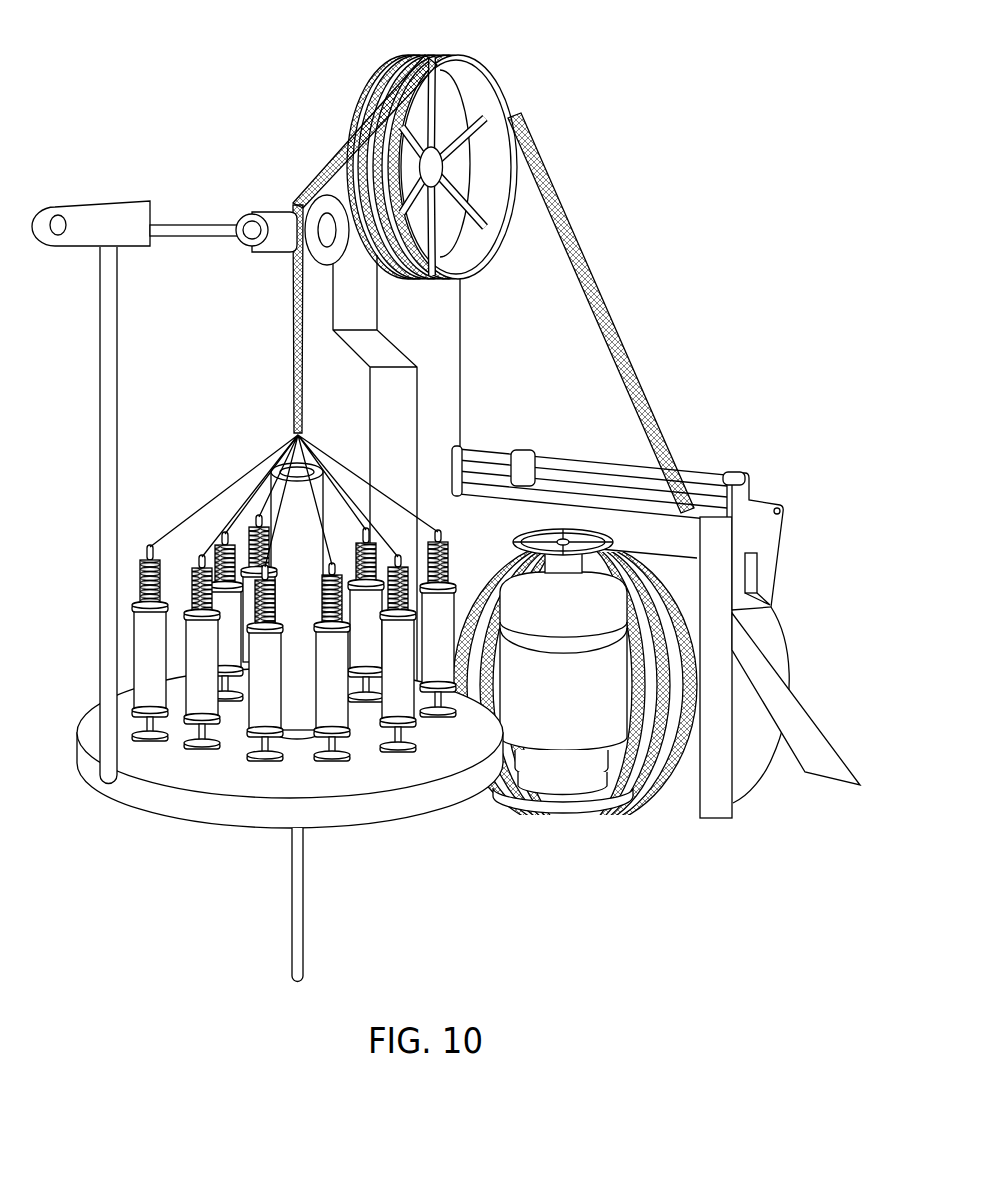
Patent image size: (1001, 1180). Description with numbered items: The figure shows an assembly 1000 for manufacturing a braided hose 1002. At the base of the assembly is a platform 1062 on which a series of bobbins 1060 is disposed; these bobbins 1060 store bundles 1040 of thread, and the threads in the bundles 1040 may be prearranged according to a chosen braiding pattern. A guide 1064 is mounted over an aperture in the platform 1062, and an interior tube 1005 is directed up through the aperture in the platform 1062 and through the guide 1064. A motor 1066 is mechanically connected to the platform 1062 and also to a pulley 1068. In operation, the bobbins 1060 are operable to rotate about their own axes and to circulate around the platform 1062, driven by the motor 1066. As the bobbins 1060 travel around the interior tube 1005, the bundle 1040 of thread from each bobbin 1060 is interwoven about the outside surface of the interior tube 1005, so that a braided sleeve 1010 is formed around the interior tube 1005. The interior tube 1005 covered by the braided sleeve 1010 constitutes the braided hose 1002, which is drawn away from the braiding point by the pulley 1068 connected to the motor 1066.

The assembly 1000 is at (446, 497).
The braided hose 1002 is at (631, 375).
The interior tube 1005 is at (283, 452).
The braided sleeve 1010 is at (286, 392).
The bundles of thread 1040 is at (182, 525).
The bobbins 1060 is at (145, 657).
The platform 1062 is at (202, 807).
The guide 1064 is at (272, 500).
The motor 1066 is at (568, 783).
The pulley 1068 is at (512, 105).